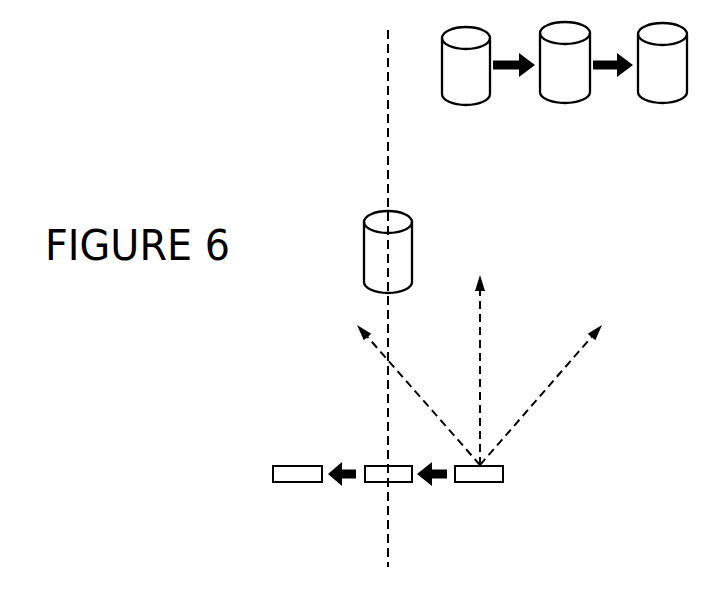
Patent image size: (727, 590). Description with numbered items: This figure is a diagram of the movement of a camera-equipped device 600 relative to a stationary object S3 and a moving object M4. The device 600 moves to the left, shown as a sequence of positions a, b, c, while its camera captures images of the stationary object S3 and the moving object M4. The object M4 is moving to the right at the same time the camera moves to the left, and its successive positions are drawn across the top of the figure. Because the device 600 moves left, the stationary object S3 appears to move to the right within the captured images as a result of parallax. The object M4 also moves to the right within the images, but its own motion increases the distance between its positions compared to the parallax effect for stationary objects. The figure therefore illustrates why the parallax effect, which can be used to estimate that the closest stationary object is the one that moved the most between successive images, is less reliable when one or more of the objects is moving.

The device 600 is at (520, 489).
The data block a is at (479, 490).
The data block b is at (388, 490).
The data block c is at (297, 490).
The stationary object S3 is at (388, 252).
The moving object M4 is at (564, 63).